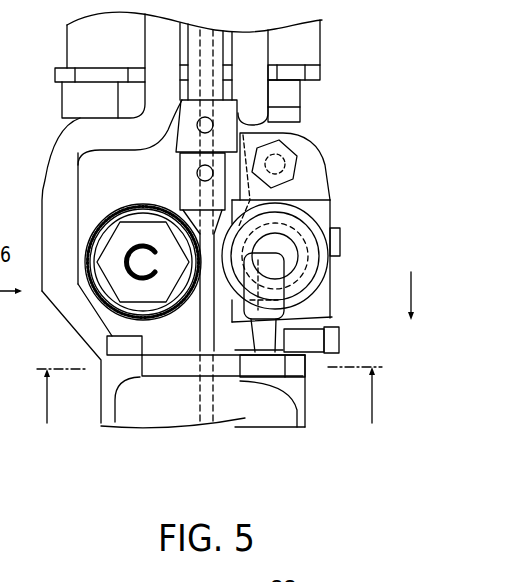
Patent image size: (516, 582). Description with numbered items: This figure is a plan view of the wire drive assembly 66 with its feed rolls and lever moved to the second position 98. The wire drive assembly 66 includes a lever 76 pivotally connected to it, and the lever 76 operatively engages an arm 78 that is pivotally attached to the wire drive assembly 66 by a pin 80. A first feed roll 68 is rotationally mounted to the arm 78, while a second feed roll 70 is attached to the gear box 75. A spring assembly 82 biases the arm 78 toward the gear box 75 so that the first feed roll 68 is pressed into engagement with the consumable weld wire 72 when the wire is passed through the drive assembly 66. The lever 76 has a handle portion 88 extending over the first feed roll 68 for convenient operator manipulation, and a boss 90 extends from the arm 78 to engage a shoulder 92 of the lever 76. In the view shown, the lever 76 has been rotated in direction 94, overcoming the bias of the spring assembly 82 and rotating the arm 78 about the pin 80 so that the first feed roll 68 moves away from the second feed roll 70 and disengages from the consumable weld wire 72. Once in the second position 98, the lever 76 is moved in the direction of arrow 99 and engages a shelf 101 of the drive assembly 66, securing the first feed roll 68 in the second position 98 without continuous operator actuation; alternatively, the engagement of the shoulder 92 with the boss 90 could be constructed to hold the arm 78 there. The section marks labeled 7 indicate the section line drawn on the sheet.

The wire drive assembly 66 is at (368, 198).
The first feed roll 68 is at (302, 241).
The second feed roll 70 is at (115, 219).
The consumable weld wire 72 is at (202, 340).
The gear box 75 is at (157, 186).
The lever 76 is at (245, 337).
The arm 78 is at (313, 182).
The pin 80 is at (283, 163).
The spring assembly 82 is at (400, 197).
The handle portion 88 is at (273, 294).
The boss 90 is at (338, 344).
The shoulder 92 is at (309, 355).
The direction of lever movement 94 is at (0, 296).
The second position 98 is at (262, 363).
The direction of lever movement 99 is at (415, 294).
The shelf 101 is at (227, 343).
The section line 7- 7 is at (209, 408).